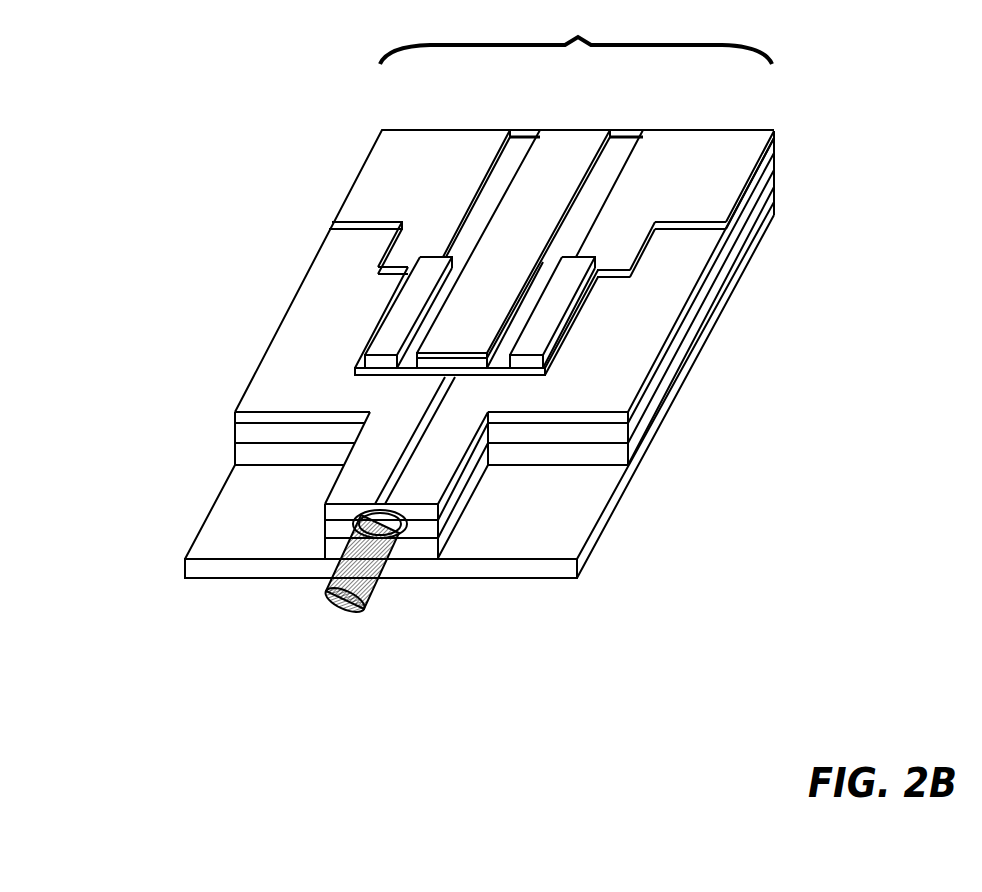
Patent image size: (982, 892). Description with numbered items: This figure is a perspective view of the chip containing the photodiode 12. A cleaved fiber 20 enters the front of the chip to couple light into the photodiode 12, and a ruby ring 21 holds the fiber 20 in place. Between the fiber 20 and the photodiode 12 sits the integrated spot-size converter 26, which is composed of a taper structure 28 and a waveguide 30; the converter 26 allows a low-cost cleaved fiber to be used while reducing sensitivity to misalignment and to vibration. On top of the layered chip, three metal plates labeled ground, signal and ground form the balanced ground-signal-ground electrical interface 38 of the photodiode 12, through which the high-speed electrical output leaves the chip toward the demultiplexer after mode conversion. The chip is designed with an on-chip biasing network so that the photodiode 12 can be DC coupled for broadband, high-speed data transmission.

The photodiode 12 is at (480, 363).
The cleaved fiber 20 is at (360, 608).
The ruby ring 21 is at (405, 543).
The integrated spot-size converter 26 is at (220, 440).
The taper structure 28 is at (440, 506).
The waveguide 30 is at (440, 402).
The balanced ground-signal-ground (GSG) electrical interface 38 is at (551, 184).